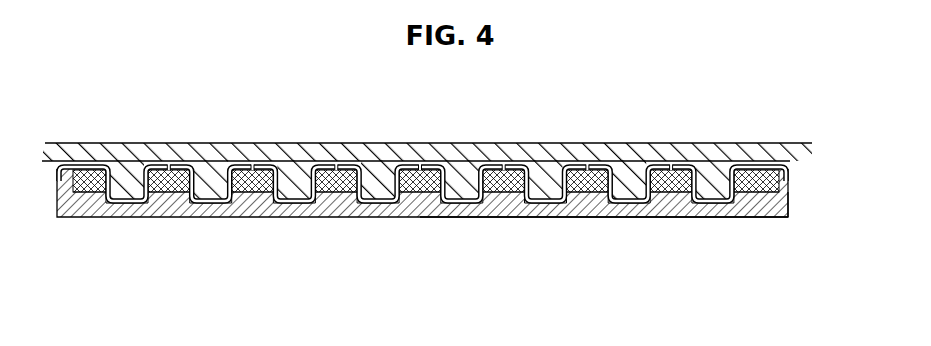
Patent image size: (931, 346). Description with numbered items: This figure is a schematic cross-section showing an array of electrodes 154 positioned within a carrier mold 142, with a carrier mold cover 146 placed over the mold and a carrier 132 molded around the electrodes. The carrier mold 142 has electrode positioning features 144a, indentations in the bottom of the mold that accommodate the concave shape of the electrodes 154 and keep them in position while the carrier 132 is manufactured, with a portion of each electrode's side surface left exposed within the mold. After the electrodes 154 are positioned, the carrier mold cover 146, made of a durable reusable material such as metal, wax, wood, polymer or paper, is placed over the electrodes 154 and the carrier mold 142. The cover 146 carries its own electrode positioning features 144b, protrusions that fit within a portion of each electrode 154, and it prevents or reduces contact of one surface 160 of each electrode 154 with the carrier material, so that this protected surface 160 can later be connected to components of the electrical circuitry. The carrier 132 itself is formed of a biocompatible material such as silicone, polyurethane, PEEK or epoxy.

The carrier 132 is at (173, 164).
The carrier mold 142 is at (200, 210).
The electrode positioning features 144a is at (607, 210).
The electrode positioning features 144b is at (710, 183).
The carrier mold cover 146 is at (273, 152).
The electrodes 154 is at (432, 167).
The surface of the electrode 160 is at (463, 199).